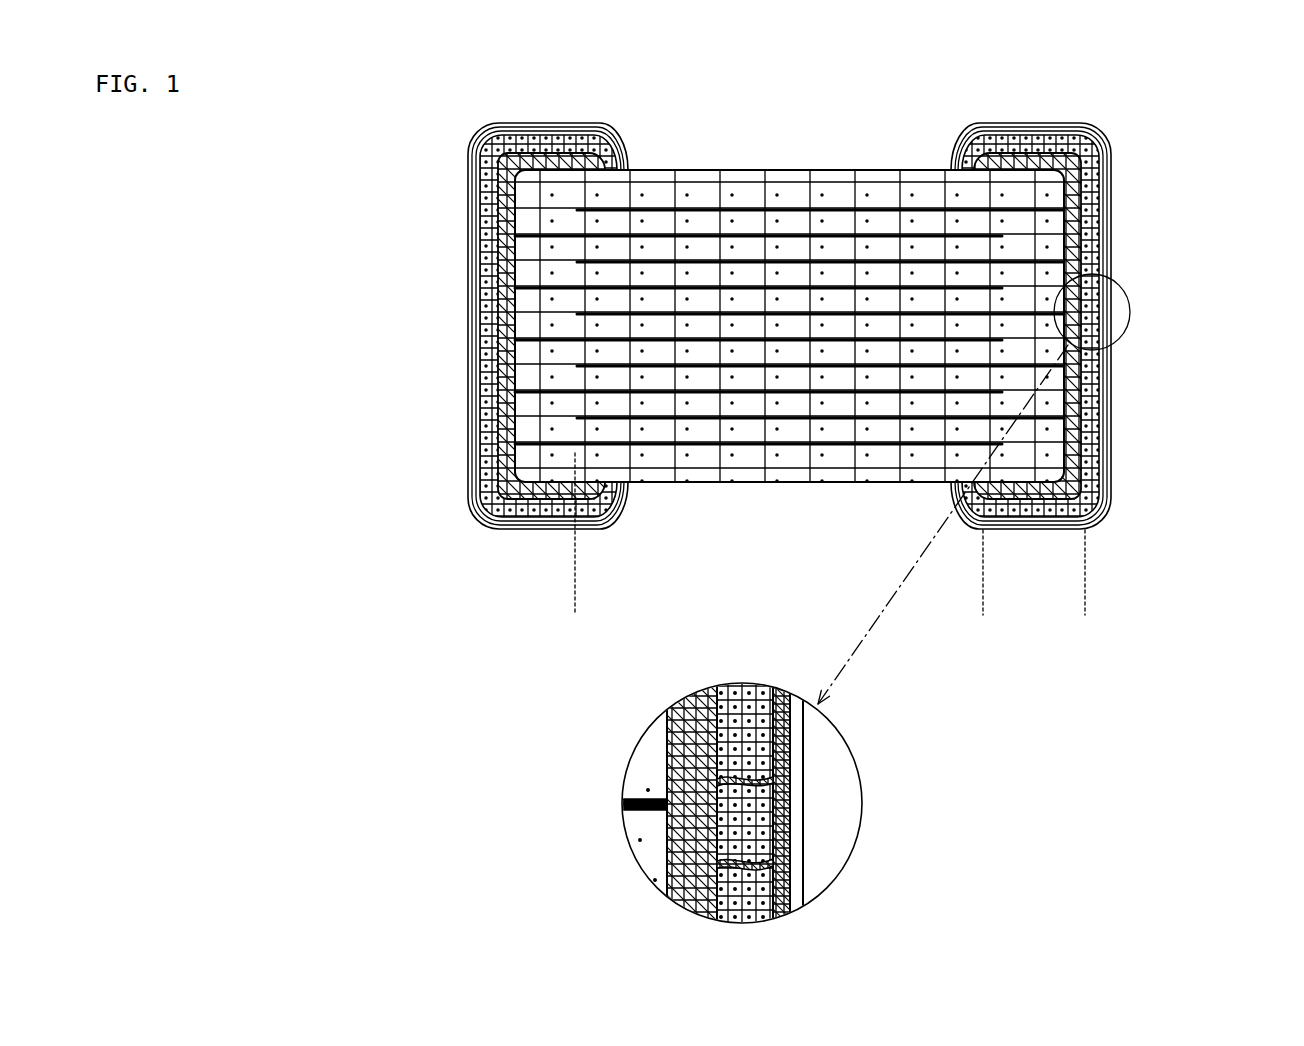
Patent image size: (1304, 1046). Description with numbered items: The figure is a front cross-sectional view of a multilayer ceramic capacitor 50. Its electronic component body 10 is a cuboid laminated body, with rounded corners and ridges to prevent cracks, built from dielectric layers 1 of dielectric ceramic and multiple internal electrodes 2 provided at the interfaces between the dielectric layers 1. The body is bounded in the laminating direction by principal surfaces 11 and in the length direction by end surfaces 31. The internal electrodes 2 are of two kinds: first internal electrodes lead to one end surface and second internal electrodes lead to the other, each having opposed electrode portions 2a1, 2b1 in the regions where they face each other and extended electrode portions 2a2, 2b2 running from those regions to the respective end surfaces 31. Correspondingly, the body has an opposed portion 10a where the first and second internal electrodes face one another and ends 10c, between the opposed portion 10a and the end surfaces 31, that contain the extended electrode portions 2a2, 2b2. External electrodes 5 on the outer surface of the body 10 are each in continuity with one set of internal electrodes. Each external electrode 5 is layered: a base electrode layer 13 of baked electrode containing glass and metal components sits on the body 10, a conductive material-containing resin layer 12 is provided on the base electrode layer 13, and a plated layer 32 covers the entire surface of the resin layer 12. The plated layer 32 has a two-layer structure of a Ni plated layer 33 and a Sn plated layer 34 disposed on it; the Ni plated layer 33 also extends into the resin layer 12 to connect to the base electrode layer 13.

The dielectric layer 1 is at (665, 398).
The internal electrode 2 is at (822, 436).
The opposed electrode portion 2a1 is at (1003, 452).
The extended electrode portion 2a2 is at (573, 452).
The opposed electrode portion 2b1 is at (1003, 200).
The extended electrode portion 2b2 is at (1062, 200).
The external electrode 5 is at (785, 519).
The electronic component body 10 is at (828, 167).
The opposed portion 10a is at (983, 583).
The end 10c is at (1085, 583).
The principal surface 11 is at (925, 168).
The conductive material-containing resin layer 12 is at (478, 390).
The base electrode layer 13 is at (505, 322).
The end surface 31 is at (490, 265).
The plated layer 32 is at (824, 523).
The Ni plated layer 33 is at (585, 668).
The Sn plated layer 34 is at (517, 527).
The multilayer ceramic capacitor 50 is at (688, 158).